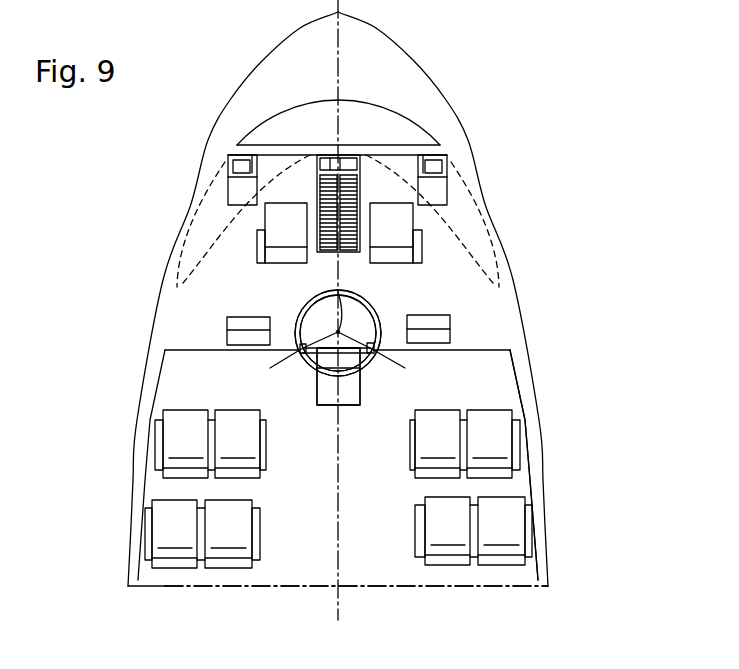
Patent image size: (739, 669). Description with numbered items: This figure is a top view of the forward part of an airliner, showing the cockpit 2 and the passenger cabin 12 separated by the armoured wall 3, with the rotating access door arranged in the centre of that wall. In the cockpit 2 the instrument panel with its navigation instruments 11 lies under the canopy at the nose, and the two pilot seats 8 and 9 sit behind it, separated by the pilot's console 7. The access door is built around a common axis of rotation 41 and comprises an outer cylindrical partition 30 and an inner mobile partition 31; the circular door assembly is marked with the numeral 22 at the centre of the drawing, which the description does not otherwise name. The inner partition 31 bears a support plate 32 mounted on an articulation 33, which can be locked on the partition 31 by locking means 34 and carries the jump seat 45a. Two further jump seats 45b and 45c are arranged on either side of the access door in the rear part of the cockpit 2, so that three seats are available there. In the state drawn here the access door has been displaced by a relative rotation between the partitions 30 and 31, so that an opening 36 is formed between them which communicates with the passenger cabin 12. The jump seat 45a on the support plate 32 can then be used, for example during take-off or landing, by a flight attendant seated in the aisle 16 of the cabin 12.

The cockpit 2 is at (188, 303).
The armoured wall 3 is at (163, 357).
The pilot's console 7 is at (360, 177).
The pilot seat 8 is at (385, 236).
The pilot seat 9 is at (278, 236).
The navigation instruments 11 is at (346, 137).
The passenger cabin 12 is at (503, 375).
The aisle 16 is at (357, 580).
The rotatable platform 22 is at (334, 328).
The outer cylindrical partition 30 is at (310, 302).
The inner mobile partition 31 is at (299, 316).
The support plate 32 is at (342, 352).
The articulation 33 is at (298, 353).
The locking means 34 is at (374, 343).
The opening 36 is at (378, 353).
The common axis of rotation 41 is at (339, 292).
The jump seat 45a is at (323, 405).
The jump seat 45b is at (450, 320).
The jump seat 45c is at (227, 320).